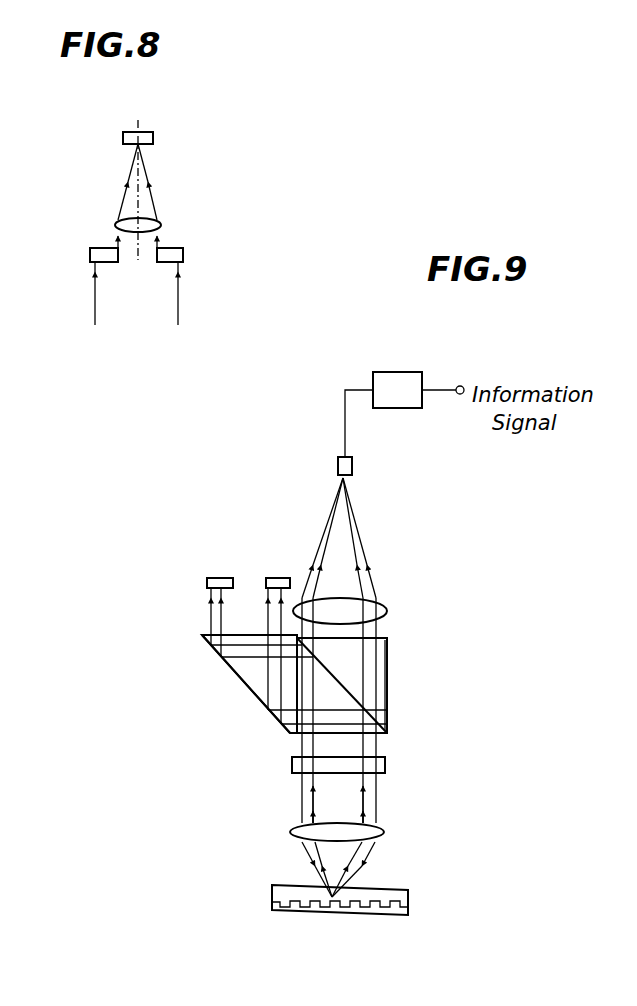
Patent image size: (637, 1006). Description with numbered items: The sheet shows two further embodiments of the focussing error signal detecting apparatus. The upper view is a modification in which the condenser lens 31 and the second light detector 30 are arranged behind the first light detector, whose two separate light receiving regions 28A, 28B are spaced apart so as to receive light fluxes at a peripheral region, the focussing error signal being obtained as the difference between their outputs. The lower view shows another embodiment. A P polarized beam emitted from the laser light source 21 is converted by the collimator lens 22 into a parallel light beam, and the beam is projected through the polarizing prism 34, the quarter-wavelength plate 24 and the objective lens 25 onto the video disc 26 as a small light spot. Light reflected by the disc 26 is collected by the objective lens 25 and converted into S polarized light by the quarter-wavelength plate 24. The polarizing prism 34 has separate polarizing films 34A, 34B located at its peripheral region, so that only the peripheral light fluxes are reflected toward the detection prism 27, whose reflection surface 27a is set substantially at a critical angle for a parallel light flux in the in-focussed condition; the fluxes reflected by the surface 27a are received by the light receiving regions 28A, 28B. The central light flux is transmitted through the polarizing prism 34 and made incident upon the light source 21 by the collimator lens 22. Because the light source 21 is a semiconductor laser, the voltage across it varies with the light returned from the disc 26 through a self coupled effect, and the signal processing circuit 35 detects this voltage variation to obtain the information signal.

In FIG. 8, the second light detector 30 is at (117, 130).
In FIG. 8, the condenser lens 31 is at (160, 223).
In FIG. 8, the light receiving region 28A is at (177, 248).
In FIG. 9, the light receiving region 28A is at (282, 578).
In FIG. 8, the light receiving region 28B is at (100, 248).
In FIG. 9, the light receiving region 28B is at (218, 578).
In FIG. 9, the signal processing circuit 35 is at (397, 382).
In FIG. 9, the laser light source 21 is at (352, 458).
In FIG. 9, the collimator lens 22 is at (388, 607).
In FIG. 9, the polarizing prism 34 is at (393, 670).
In FIG. 9, the polarizing film 34A is at (380, 713).
In FIG. 9, the polarizing film 34B is at (300, 655).
In FIG. 9, the detection prism 27 is at (245, 667).
In FIG. 9, the reflection surface 27a is at (254, 684).
In FIG. 9, the quarter-wavelength plate 24 is at (385, 765).
In FIG. 9, the objective lens 25 is at (385, 835).
In FIG. 9, the video disc 26 is at (332, 913).